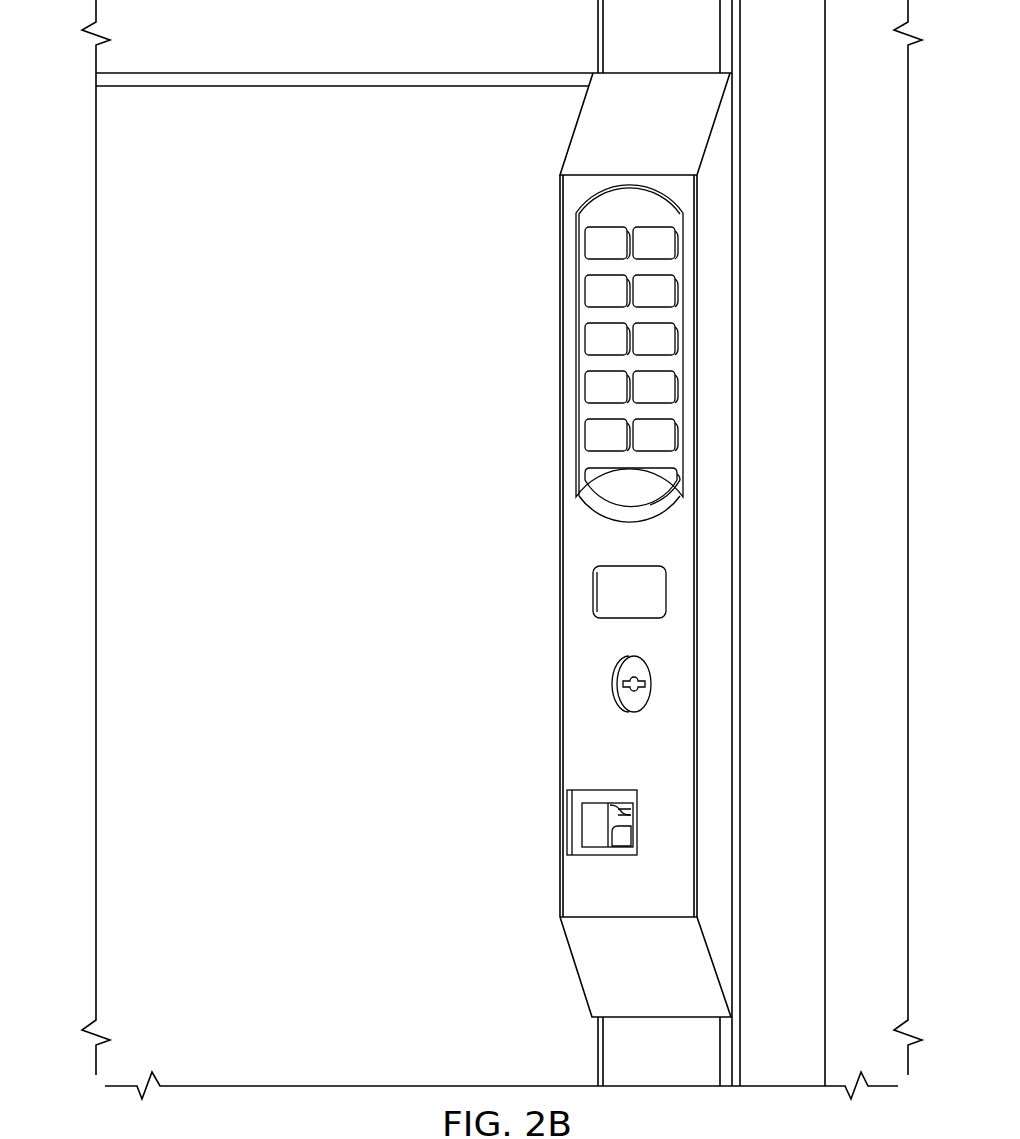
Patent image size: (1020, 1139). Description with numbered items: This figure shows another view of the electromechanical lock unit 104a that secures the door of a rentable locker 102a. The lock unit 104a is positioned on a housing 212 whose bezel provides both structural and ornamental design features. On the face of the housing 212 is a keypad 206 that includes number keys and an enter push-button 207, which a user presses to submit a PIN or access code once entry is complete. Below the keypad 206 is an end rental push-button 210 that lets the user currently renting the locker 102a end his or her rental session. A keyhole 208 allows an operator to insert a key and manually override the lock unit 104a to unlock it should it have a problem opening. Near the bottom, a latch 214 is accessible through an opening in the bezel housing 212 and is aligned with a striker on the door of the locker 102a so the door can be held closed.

The locker 102a is at (373, 600).
The electromechanical lock unit 104a is at (552, 363).
The keypad 206 is at (586, 266).
The enter push-button 207 is at (595, 483).
The keyhole 208 is at (616, 674).
The end rental push-button 210 is at (600, 583).
The housing 212 is at (588, 120).
The latch 214 is at (588, 823).